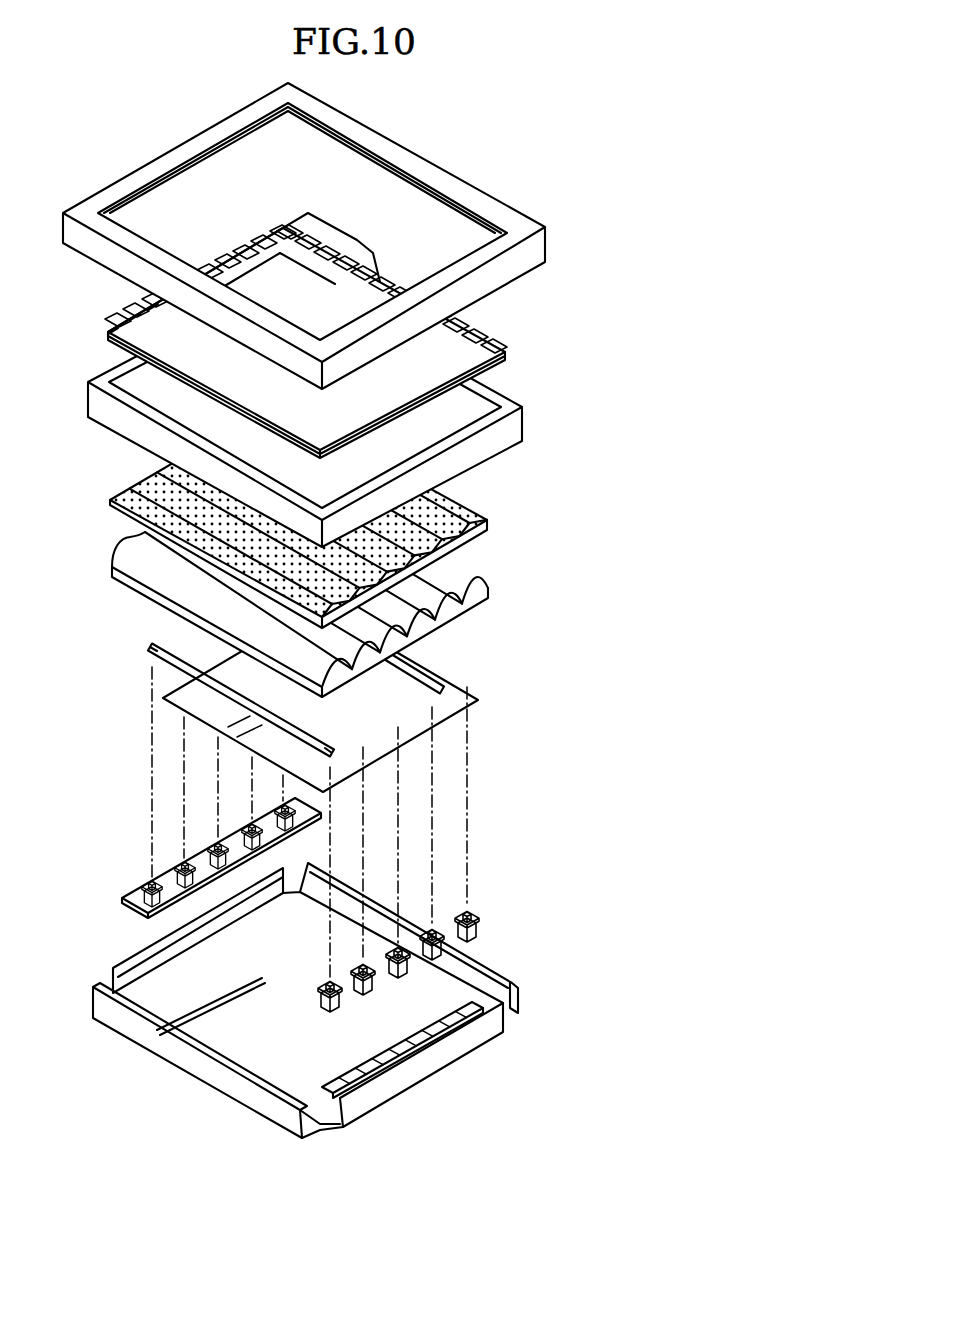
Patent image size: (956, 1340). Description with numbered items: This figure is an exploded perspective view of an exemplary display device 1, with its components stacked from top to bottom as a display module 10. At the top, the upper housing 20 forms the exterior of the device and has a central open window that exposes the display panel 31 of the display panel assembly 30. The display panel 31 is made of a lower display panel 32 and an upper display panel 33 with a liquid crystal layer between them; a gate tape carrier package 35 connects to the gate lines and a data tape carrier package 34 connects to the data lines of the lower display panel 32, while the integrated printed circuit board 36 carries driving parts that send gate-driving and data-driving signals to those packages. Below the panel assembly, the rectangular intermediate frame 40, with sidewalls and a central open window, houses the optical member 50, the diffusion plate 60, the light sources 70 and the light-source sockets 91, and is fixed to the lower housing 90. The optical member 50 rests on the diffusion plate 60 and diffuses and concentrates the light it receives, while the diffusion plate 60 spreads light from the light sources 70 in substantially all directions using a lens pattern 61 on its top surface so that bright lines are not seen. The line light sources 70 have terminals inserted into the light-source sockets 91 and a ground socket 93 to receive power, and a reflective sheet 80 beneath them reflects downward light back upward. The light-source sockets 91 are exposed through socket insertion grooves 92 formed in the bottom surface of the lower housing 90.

The display device 1 is at (357, 643).
The display module 10 is at (357, 610).
The upper housing 20 is at (527, 227).
The display panel assembly 30 is at (331, 335).
The display panel 31 is at (367, 335).
The lower display panel 32 is at (462, 378).
The upper display panel 33 is at (440, 364).
The data tape carrier package 34 is at (492, 348).
The gate tape carrier package 35 is at (120, 310).
The integrated printed circuit board 36 is at (505, 338).
The intermediate frame 40 is at (512, 422).
The optical member 50 is at (502, 500).
The diffusion plate 60 is at (348, 614).
The lens pattern 61 is at (478, 570).
The light sources 70 is at (428, 661).
The reflective sheet 80 is at (440, 708).
The lower housing 90 is at (535, 1001).
The light-source sockets 91 is at (483, 888).
The socket insertion grooves 92 is at (442, 1033).
The ground socket 93 is at (121, 882).